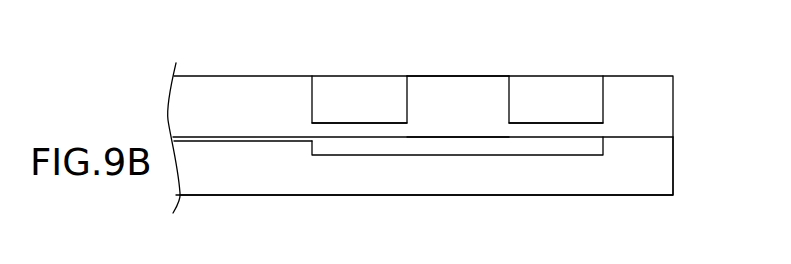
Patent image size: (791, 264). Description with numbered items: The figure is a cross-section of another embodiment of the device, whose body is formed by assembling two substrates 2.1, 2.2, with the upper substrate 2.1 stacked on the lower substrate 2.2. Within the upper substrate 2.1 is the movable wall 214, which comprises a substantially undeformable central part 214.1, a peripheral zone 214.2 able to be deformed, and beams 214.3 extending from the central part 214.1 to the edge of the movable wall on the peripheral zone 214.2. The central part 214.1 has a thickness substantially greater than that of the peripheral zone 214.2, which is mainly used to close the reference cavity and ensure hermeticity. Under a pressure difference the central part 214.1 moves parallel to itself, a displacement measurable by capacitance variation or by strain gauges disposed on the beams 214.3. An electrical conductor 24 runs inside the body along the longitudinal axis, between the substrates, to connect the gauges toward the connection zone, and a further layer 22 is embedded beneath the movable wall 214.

The movable wall 214 is at (628, 63).
The central part 214.1 is at (453, 104).
The peripheral zone 214.2 is at (375, 128).
The beams 214.3 is at (331, 84).
The substrate 2.1 is at (658, 93).
The substrate 2.2 is at (658, 156).
The embedded element 22 is at (498, 146).
The electrical conductor 24 is at (258, 141).